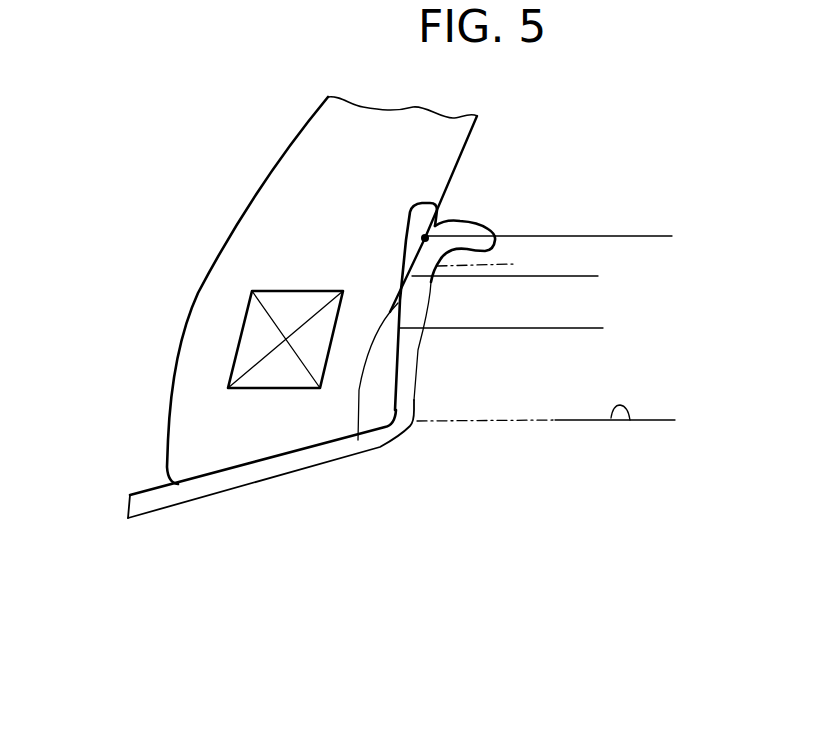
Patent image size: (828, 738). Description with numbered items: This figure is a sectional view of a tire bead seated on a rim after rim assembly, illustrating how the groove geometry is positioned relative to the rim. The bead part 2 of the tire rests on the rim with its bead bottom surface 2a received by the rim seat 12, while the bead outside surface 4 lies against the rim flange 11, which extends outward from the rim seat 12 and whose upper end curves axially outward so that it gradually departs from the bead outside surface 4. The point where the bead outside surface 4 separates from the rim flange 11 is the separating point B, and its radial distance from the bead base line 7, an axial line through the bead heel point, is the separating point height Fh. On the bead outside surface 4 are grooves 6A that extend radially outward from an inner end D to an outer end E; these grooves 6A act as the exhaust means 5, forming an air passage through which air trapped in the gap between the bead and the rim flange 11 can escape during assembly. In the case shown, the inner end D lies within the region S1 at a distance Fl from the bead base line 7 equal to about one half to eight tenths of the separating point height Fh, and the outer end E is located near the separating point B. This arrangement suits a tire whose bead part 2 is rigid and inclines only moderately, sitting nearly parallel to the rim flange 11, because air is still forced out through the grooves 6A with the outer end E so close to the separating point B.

The bead part 2 is at (152, 378).
The bead bottom surface 2a is at (235, 472).
The rim seat 12 is at (297, 463).
The bead outside surface 4 is at (397, 392).
The exhaust means 5 is at (426, 371).
The grooves 6A is at (358, 440).
The rim flange 11 is at (413, 377).
The bead base line 7 is at (611, 418).
The separating point B is at (425, 238).
The outer end E is at (437, 206).
The inner end D is at (515, 264).
The region S1 is at (584, 276).
The distance F1 Fl is at (584, 328).
The separating point height Fh is at (657, 236).